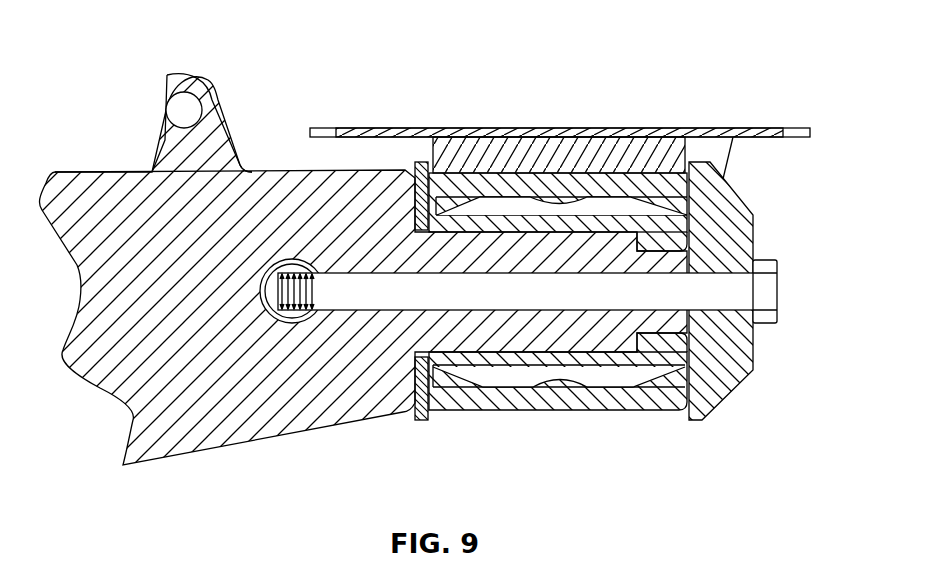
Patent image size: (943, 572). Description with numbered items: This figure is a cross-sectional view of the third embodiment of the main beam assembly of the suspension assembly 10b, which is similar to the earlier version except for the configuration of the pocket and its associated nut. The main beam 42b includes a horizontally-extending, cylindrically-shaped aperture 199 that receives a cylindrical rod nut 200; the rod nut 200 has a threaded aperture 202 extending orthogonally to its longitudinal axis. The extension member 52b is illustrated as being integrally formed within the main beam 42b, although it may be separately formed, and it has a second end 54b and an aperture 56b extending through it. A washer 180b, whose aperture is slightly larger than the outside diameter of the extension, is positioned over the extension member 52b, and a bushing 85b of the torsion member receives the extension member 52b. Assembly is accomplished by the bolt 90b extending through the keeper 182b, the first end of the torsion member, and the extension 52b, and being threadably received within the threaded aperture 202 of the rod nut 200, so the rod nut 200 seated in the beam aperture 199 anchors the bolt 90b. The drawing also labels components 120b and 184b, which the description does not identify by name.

The suspension assembly 10b is at (306, 40).
The main beam 42b is at (278, 170).
The threaded aperture 202 is at (313, 262).
The cylindrically-shaped aperture 199 is at (273, 320).
The rod nut 200 is at (298, 323).
The washer 180b is at (424, 160).
The extension member 52b is at (518, 240).
The aperture 56b is at (596, 250).
The second end 54b is at (640, 258).
The mounting plate 120b is at (693, 128).
The keeper 182b is at (737, 193).
The shaft 184b is at (727, 300).
The bolt 90b is at (780, 292).
The bushing 85b is at (600, 377).